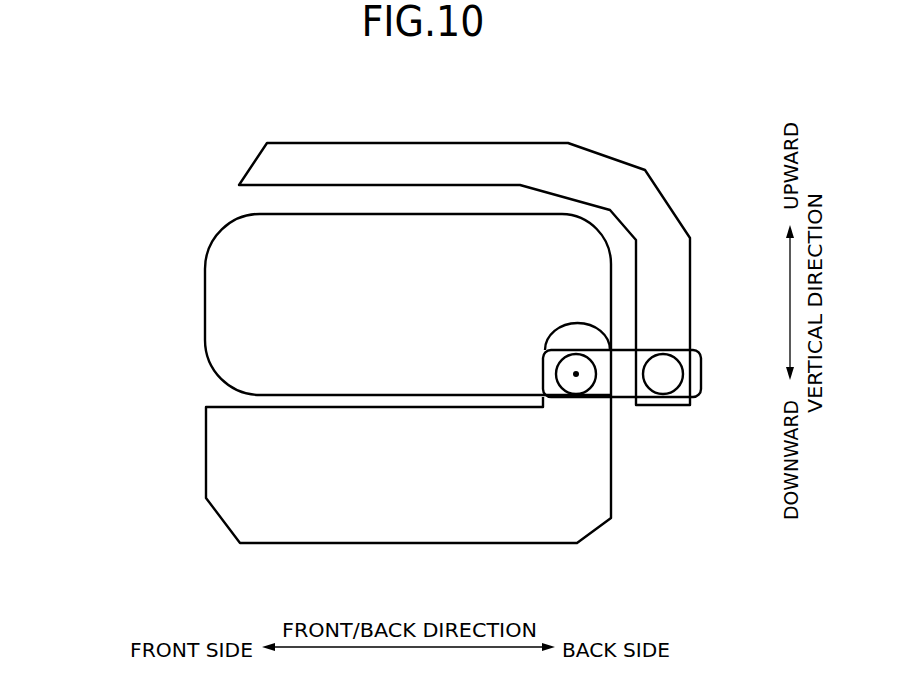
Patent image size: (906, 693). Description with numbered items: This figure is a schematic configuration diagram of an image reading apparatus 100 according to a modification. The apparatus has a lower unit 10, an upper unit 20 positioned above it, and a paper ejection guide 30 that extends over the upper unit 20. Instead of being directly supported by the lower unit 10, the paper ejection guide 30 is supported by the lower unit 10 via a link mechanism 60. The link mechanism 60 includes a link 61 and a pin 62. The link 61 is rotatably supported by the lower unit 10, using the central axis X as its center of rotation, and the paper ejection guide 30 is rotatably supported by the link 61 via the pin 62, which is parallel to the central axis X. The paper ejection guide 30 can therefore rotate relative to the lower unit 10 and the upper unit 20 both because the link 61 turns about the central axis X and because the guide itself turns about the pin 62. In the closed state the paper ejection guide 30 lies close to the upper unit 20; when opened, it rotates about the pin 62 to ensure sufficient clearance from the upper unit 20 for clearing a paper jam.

The image reading apparatus 100 is at (58, 148).
The paper ejection guide 30 is at (466, 142).
The upper unit 20 is at (183, 320).
The lower unit 10 is at (183, 487).
The link mechanism 60 is at (644, 376).
The link 61 is at (623, 400).
The pin 62 is at (663, 374).
The central axis X is at (576, 374).